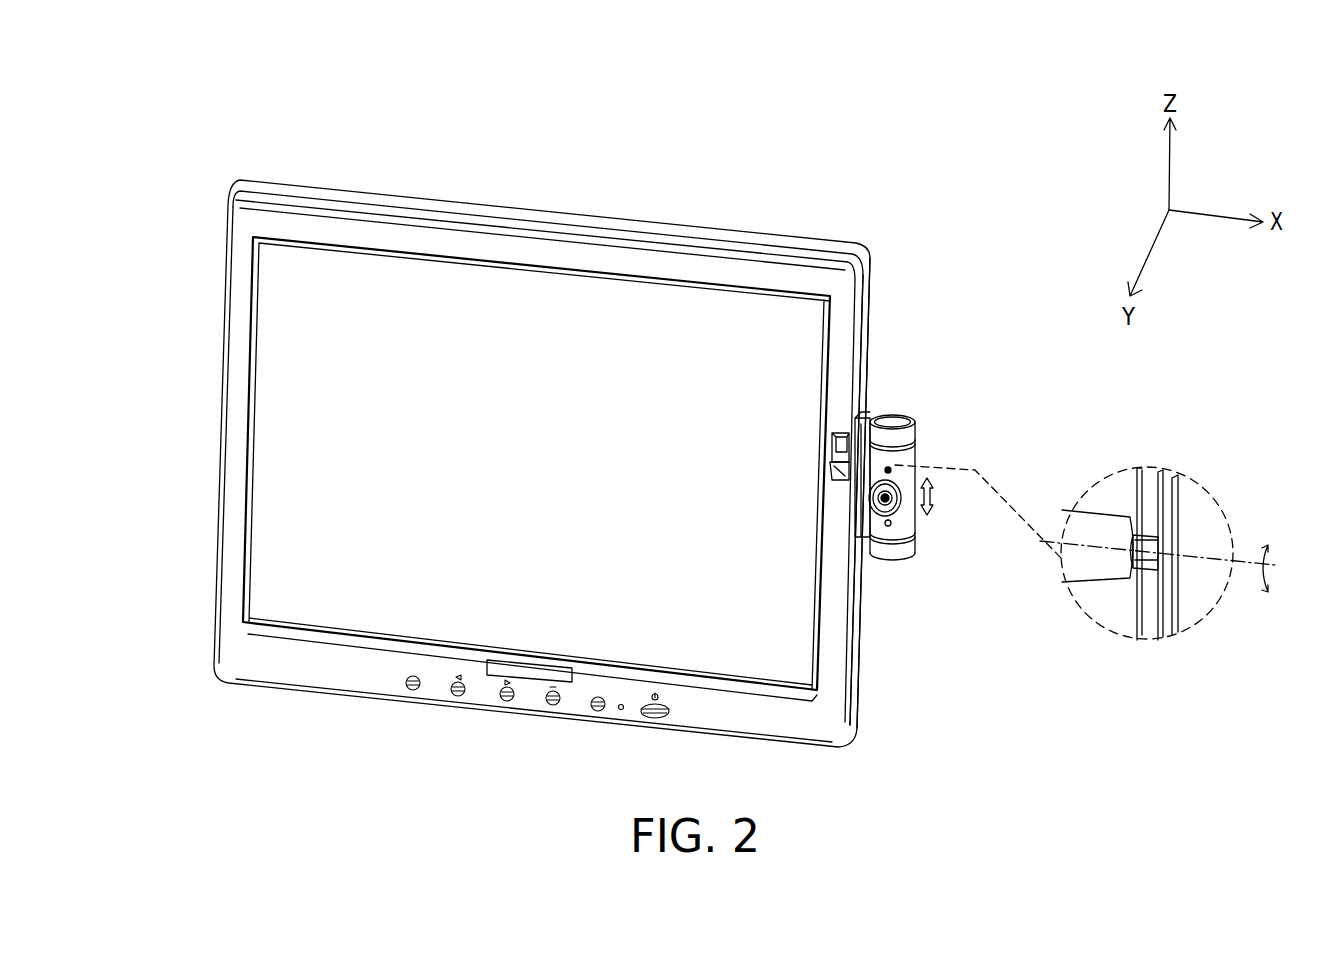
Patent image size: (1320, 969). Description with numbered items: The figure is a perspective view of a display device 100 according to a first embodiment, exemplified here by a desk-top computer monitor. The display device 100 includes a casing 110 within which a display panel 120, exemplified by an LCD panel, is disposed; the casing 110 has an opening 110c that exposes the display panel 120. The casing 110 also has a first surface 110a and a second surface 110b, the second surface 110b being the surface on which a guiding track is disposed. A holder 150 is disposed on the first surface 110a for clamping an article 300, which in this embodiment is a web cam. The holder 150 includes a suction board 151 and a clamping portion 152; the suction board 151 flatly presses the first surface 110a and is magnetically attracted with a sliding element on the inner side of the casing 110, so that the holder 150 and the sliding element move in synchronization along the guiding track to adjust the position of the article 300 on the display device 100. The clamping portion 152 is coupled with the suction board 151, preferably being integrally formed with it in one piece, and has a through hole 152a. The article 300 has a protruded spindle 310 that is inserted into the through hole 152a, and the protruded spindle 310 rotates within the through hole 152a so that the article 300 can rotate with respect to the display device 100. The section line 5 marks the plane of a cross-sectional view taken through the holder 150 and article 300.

The display device 100 is at (178, 121).
The casing 110 is at (858, 365).
The first surface 110a is at (857, 324).
The second surface 110b is at (517, 194).
The opening 110c is at (606, 296).
The display panel 120 is at (708, 325).
The holder 150 is at (697, 466).
The suction board 151 is at (832, 447).
The clamping portion 152 is at (836, 470).
The through hole 152a is at (1150, 548).
The article 300 is at (890, 435).
The protruded spindle 310 is at (848, 480).
The section line 5-5' 5 is at (830, 443).